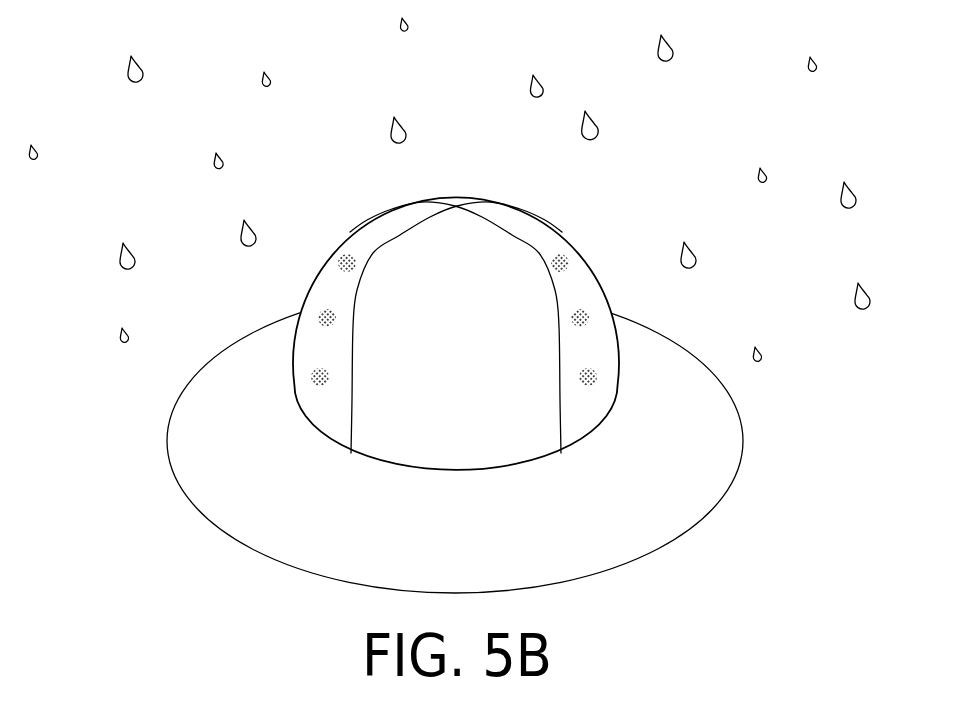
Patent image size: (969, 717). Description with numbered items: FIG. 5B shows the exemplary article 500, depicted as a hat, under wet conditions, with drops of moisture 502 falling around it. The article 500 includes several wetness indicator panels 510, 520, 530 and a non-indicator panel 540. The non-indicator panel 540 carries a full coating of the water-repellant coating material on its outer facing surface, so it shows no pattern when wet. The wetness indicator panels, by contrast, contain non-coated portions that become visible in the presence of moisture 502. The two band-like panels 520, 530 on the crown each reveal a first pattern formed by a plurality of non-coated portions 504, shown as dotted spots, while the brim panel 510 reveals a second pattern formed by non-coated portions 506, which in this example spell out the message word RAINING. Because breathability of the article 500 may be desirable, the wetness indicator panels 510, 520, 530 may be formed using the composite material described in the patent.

The article 500 is at (559, 326).
The moisture 502 is at (599, 121).
The non-coated portions 504 is at (578, 322).
The non-coated portions 506 is at (440, 495).
The wetness indicator panel 510 is at (278, 543).
The wetness indicator panel 520 is at (556, 240).
The wetness indicator panel 530 is at (356, 240).
The non-indicator panel 540 is at (431, 372).